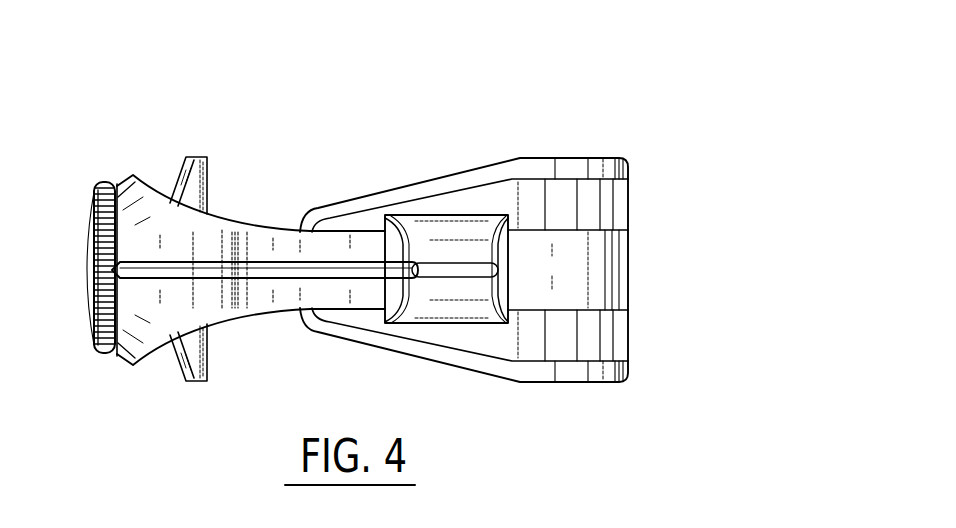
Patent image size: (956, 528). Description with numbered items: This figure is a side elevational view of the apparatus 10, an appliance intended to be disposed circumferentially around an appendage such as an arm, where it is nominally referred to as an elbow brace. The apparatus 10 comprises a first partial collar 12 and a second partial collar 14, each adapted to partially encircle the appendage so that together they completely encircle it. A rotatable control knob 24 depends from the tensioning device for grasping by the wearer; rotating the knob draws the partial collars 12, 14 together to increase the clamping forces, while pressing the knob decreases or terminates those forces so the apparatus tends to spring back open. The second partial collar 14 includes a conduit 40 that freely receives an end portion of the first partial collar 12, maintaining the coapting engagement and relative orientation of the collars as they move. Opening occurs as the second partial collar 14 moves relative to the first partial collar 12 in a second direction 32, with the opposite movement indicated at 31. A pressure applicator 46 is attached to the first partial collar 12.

The apparatus 10 is at (393, 222).
The first partial collar 12 is at (260, 292).
The second partial collar 14 is at (520, 291).
The rotatable control knob 24 is at (103, 350).
The upper cap portion 31 is at (640, 198).
The second direction 32 is at (645, 340).
The conduit 40 is at (468, 257).
The pressure applicator 46 is at (200, 196).